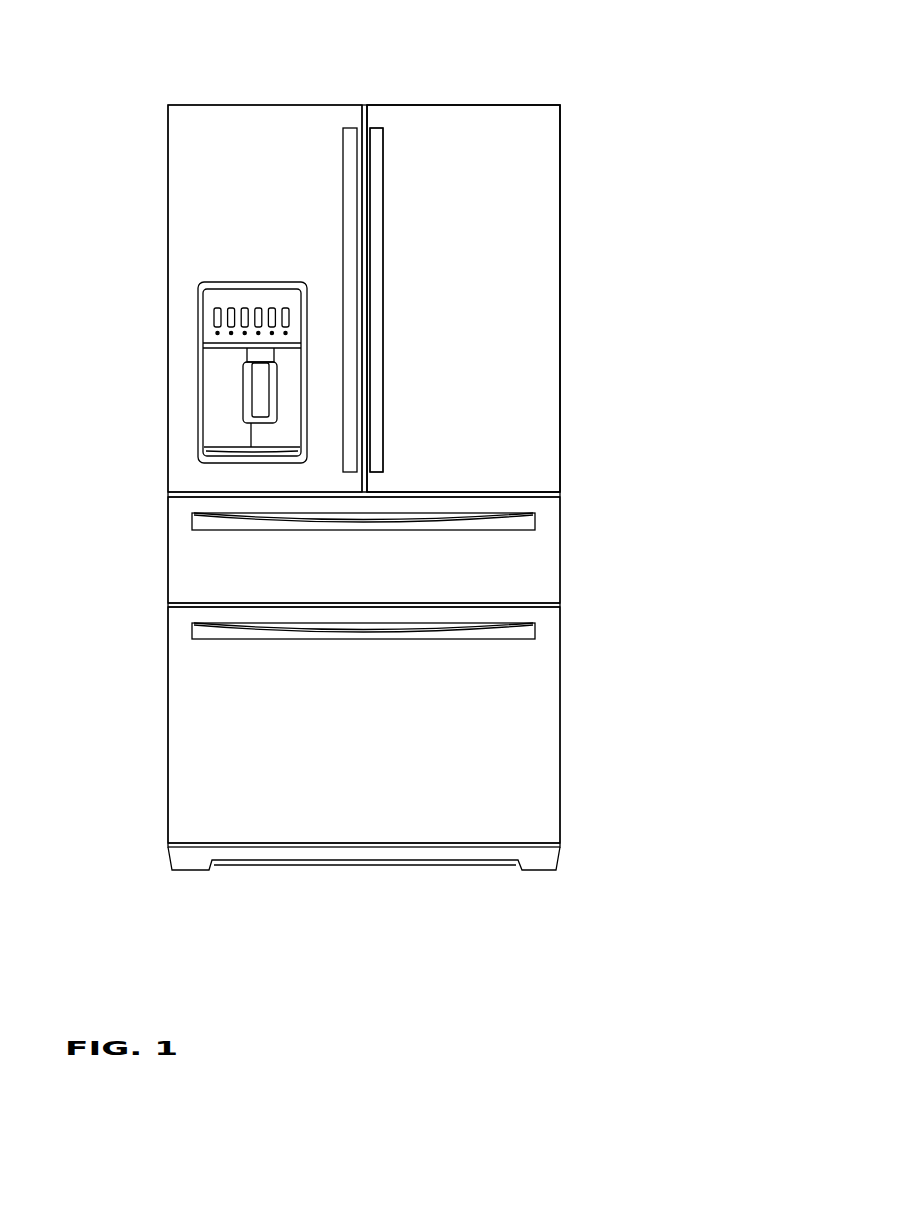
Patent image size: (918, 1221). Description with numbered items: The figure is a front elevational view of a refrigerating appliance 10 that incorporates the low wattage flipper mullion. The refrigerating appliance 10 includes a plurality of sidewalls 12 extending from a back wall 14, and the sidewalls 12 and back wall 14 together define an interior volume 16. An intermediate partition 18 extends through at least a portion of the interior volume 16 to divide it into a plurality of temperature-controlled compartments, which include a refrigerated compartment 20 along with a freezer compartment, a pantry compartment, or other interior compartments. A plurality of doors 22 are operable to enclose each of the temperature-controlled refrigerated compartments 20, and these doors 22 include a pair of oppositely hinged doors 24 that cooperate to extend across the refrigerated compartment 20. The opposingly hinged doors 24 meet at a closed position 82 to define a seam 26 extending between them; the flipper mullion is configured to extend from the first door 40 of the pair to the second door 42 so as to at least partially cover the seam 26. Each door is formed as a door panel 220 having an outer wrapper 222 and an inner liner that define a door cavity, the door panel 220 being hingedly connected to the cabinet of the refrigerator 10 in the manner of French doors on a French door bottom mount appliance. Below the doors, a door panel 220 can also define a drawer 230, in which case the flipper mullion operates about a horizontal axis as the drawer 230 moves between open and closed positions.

The refrigerating appliance 10 is at (660, 445).
The sidewalls 12 is at (562, 657).
The back wall 14 is at (515, 100).
The interior volume 16 is at (520, 247).
The intermediate partition 18 is at (531, 494).
The refrigerated compartment 20 is at (218, 197).
The doors 22 is at (210, 563).
The oppositely hinged doors 24 is at (572, 333).
The seam 26 is at (365, 100).
The first door 40 is at (208, 250).
The second door 42 is at (533, 387).
The closed position 82 is at (318, 100).
The door panel 220 is at (518, 180).
The outer wrapper 222 is at (185, 382).
The drawer 230 is at (574, 595).